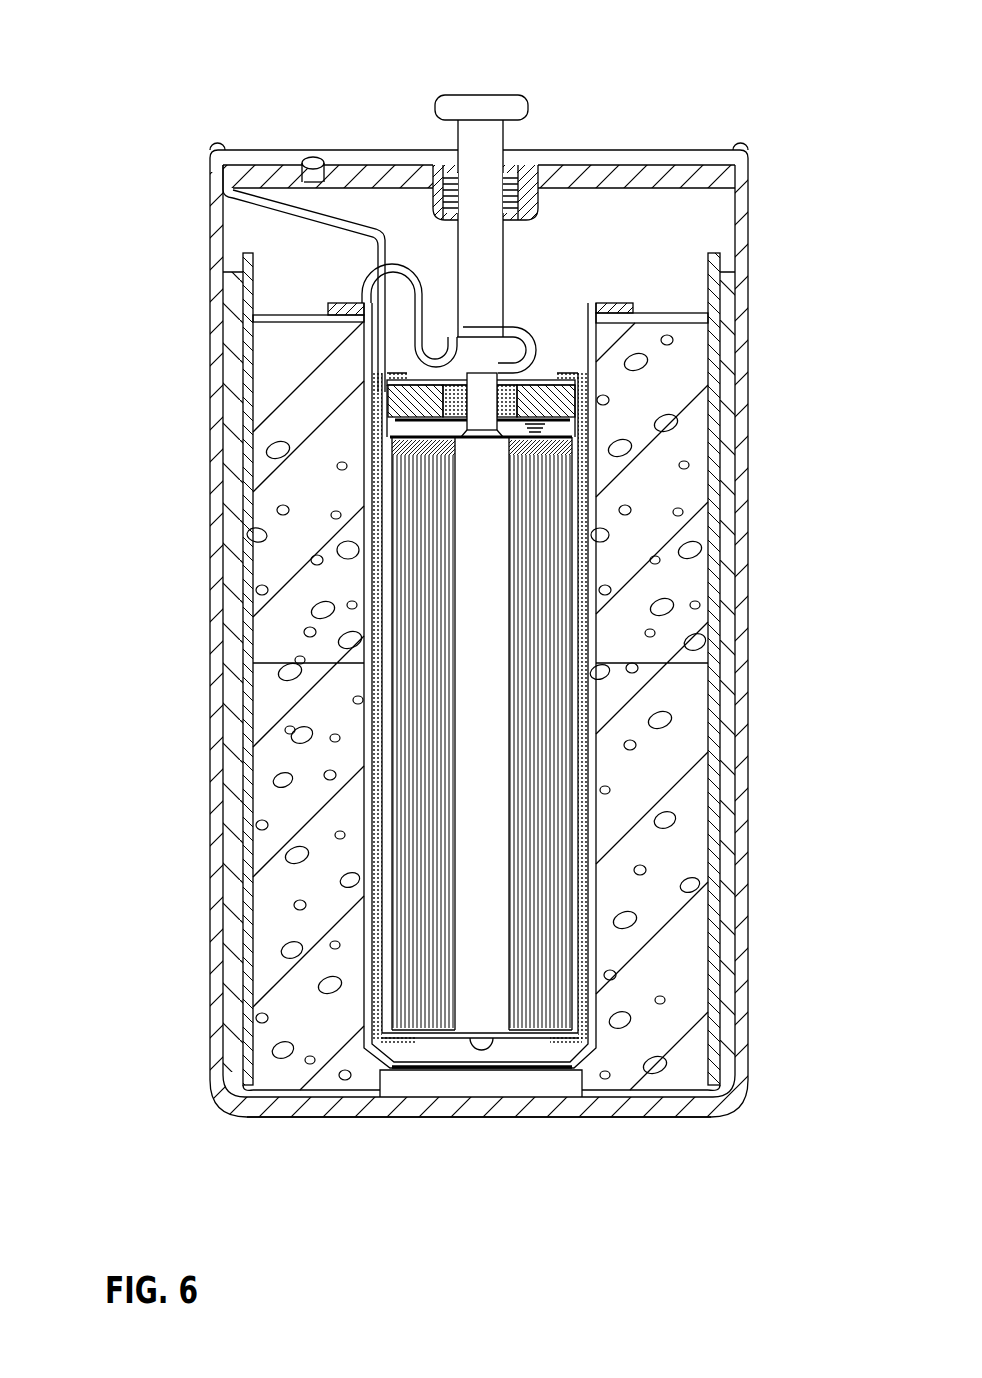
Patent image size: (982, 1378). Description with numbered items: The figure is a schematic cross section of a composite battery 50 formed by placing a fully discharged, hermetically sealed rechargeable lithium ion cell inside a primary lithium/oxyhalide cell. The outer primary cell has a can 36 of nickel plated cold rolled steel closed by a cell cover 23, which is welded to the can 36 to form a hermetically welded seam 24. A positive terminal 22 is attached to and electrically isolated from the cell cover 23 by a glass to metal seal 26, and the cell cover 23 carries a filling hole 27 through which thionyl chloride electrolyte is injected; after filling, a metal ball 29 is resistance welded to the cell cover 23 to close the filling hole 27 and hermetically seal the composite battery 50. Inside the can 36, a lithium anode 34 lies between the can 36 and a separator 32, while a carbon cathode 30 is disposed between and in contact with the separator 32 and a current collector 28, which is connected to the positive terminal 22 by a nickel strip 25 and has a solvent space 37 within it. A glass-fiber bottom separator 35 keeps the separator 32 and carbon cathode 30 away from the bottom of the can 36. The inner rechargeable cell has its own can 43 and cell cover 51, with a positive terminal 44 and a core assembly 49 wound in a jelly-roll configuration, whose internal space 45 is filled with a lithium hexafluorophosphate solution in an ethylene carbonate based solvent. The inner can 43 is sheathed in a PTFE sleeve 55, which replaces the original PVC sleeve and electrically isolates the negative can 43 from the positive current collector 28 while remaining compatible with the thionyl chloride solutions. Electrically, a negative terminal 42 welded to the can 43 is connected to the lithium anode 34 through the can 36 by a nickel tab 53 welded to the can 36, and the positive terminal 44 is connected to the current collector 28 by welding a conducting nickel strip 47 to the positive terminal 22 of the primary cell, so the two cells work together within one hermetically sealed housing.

The composite battery 50 is at (383, 58).
The positive terminal 22 is at (478, 100).
The cell cover 23 is at (600, 178).
The hermetically welded seam 24 is at (212, 150).
The nickel strip 25 is at (383, 343).
The glass to metal seal 26 is at (508, 208).
The filling hole 27 is at (319, 188).
The current collector 28 is at (395, 437).
The metal ball 29 is at (313, 157).
The carbon cathode 30 is at (318, 708).
The separator 32 is at (245, 598).
The lithium anode 34 is at (233, 800).
The glass-fiber bottom separator 35 is at (515, 1082).
The can 36 is at (212, 1062).
The solvent space 37 is at (584, 322).
The negative terminal 42 is at (373, 258).
The can 43 is at (437, 1043).
The positive terminal 44 is at (483, 425).
The space 45 is at (487, 772).
The conducting nickel strip 47 is at (545, 357).
The core assembly 49 is at (535, 578).
The cell cover 51 is at (560, 375).
The nickel tab 53 is at (330, 203).
The PTFE sleeve 55 is at (592, 622).